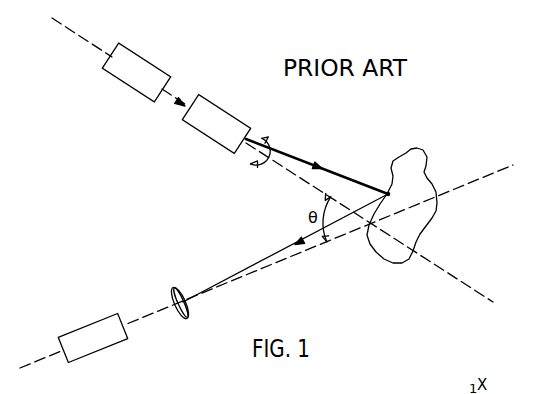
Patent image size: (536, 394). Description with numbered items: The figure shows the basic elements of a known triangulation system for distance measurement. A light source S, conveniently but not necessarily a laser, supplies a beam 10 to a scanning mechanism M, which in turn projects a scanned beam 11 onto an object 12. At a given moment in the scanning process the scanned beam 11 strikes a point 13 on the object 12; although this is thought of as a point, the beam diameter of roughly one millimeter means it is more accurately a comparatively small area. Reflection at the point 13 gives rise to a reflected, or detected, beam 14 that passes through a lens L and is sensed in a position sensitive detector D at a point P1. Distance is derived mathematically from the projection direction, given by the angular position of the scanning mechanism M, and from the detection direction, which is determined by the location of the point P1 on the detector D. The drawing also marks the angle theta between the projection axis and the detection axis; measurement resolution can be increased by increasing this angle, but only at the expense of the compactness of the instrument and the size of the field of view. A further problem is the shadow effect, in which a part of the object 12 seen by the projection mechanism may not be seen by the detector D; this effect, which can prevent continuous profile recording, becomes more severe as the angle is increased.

The beam 10 is at (175, 91).
The scanned beam 11 is at (293, 158).
The object 12 is at (414, 170).
The point 13 is at (391, 178).
The reflected beam 14 is at (267, 262).
The light source S is at (132, 155).
The scanning mechanism M is at (226, 131).
The position sensitive detector D is at (138, 287).
The lens L is at (187, 318).
The point P1 is at (128, 338).